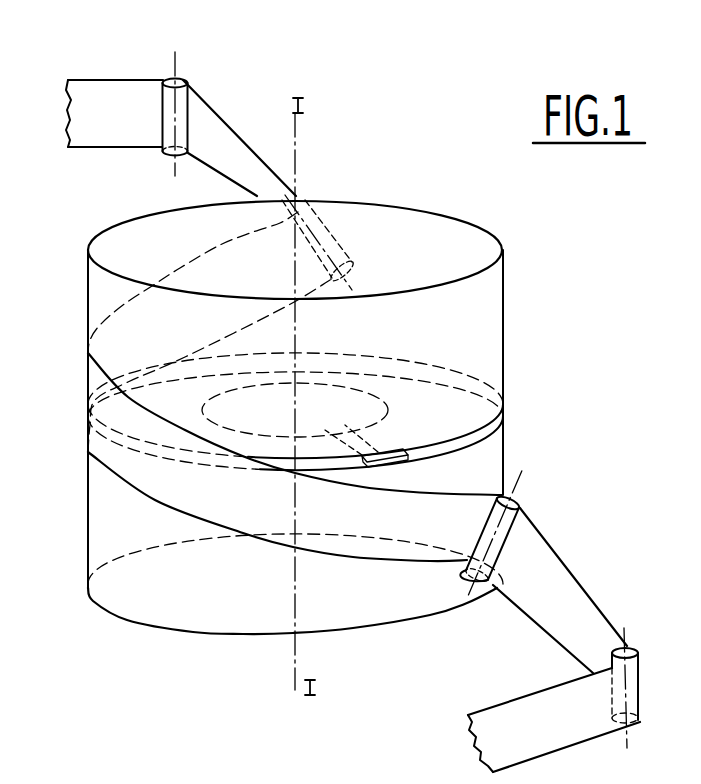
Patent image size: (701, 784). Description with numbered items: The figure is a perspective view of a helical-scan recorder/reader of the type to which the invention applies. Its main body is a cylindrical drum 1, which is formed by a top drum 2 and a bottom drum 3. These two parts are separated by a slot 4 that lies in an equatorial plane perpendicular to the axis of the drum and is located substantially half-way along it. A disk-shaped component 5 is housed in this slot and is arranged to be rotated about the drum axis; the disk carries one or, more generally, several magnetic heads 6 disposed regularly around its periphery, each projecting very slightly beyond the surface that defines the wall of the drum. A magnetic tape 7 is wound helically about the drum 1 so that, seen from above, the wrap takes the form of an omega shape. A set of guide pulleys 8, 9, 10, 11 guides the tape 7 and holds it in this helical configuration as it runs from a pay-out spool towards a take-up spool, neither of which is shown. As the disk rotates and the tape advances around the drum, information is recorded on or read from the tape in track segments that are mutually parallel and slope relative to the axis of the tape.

The cylindrical drum 1 is at (77, 317).
The top drum 2 is at (490, 300).
The bottom drum 3 is at (88, 531).
The slot 4 is at (480, 433).
The disk-shaped component 5 is at (383, 403).
The magnetic heads 6 is at (405, 458).
The magnetic tape 7 is at (242, 134).
The guide pulley 8 is at (630, 648).
The guide pulley 9 is at (497, 532).
The guide pulley 10 is at (323, 237).
The guide pulley 11 is at (168, 112).